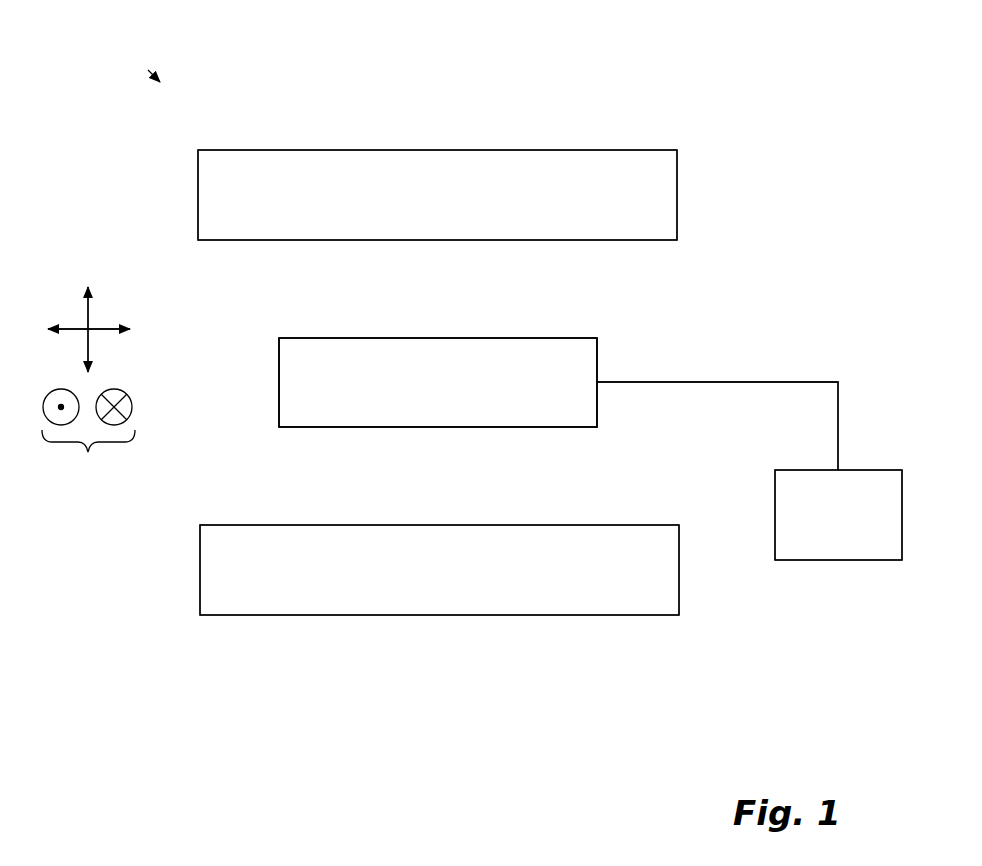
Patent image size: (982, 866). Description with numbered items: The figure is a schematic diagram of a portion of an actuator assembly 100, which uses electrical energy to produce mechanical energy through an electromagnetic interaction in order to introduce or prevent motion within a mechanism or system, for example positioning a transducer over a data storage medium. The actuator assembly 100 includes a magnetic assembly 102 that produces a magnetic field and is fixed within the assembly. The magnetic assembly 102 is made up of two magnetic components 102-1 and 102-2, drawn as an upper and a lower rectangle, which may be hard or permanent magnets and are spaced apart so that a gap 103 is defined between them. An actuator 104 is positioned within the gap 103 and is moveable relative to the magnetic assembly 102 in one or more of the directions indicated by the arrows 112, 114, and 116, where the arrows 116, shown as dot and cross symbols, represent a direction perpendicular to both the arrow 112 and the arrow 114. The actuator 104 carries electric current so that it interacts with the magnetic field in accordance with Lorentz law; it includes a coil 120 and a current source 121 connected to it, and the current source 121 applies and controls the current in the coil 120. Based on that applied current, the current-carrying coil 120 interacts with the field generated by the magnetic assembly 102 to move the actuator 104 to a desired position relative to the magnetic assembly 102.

The actuator assembly 100 is at (160, 82).
The magnetic assembly 102 is at (490, 134).
The magnetic component 102-1 is at (198, 200).
The magnetic component 102-2 is at (200, 572).
The gap 103 is at (695, 298).
The actuator 104 is at (481, 312).
The coil 120 is at (462, 427).
The current source 121 is at (865, 470).
The arrow 114 is at (86, 313).
The arrow 112 is at (103, 325).
The arrows 116 is at (88, 437).